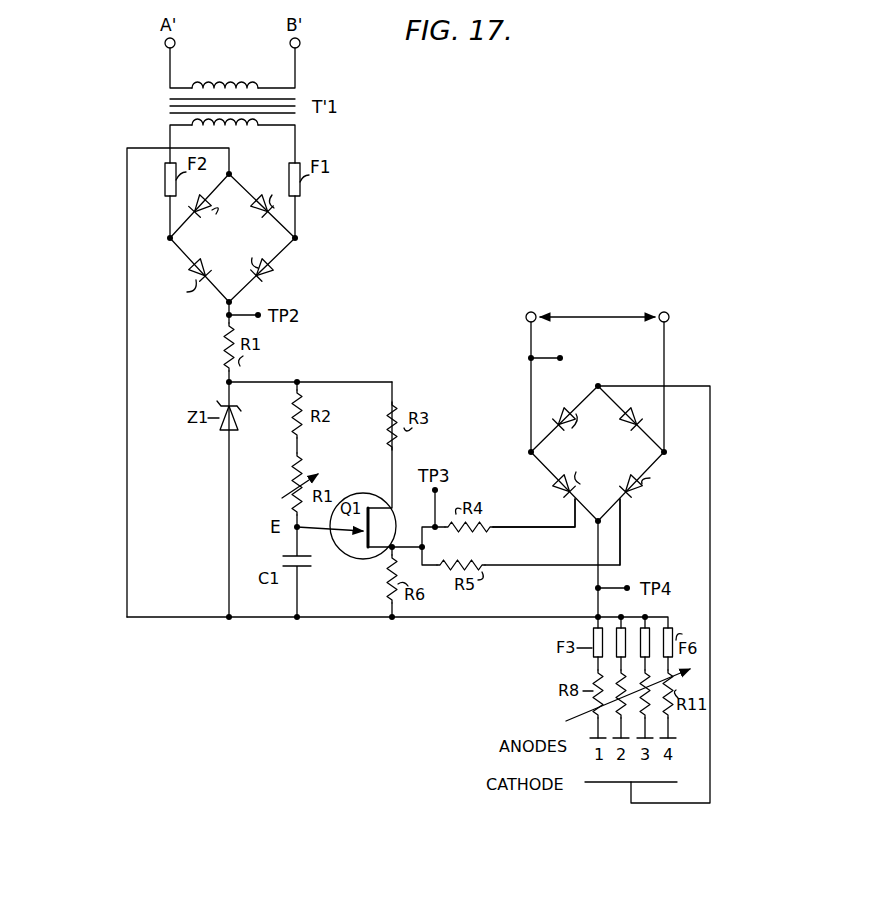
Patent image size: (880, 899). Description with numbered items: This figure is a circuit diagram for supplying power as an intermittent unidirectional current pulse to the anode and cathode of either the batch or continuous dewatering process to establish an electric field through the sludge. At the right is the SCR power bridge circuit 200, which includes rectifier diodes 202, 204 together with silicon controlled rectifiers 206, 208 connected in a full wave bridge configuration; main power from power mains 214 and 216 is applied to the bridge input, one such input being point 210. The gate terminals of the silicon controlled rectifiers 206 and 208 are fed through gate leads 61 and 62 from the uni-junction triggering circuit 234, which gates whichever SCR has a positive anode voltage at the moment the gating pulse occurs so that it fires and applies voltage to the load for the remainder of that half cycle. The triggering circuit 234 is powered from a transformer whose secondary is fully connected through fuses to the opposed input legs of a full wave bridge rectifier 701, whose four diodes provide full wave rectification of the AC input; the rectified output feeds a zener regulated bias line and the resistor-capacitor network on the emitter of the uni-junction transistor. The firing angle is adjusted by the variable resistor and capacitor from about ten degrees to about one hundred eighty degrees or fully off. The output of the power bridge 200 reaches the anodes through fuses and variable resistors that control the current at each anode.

The power supply circuit 200 is at (606, 545).
The full wave bridge rectifier 701 is at (332, 227).
The SCR triggering circuit 234 is at (96, 400).
The rectifier diode 202 is at (553, 412).
The rectifier diode 204 is at (647, 412).
The silicon controlled rectifier 206 is at (557, 488).
The silicon controlled rectifier 208 is at (643, 491).
The point 210 is at (667, 453).
The power main 214 is at (531, 337).
The power main 216 is at (666, 358).
The gate lead of SCR1 61 is at (520, 528).
The gate lead of SCR2 62 is at (621, 543).